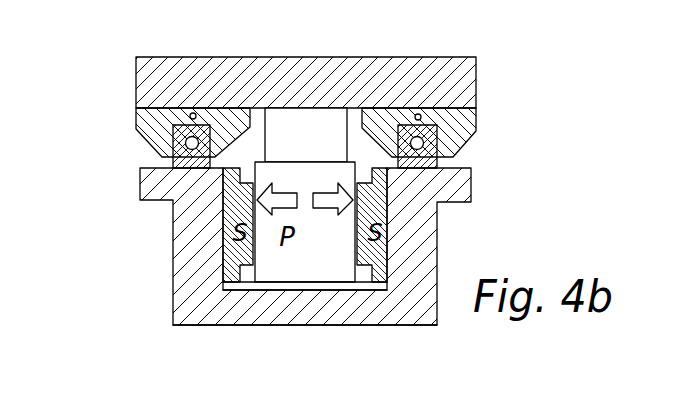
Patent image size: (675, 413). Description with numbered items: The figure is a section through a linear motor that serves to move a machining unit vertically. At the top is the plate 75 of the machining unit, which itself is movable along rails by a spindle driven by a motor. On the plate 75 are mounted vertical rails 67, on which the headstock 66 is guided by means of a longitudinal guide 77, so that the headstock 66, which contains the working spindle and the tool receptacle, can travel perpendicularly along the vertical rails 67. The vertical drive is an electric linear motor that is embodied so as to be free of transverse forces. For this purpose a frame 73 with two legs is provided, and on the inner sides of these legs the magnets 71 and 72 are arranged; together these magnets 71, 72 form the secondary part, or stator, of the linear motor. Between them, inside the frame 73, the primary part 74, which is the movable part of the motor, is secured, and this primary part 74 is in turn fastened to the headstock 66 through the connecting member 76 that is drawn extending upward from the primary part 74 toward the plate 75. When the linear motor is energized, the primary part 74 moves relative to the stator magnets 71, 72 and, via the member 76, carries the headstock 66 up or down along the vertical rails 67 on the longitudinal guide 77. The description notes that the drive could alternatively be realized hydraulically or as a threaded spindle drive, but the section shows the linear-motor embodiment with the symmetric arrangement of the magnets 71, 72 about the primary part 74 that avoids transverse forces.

The headstock 66 is at (140, 290).
The vertical rail 67 is at (222, 123).
The magnet 71 is at (377, 247).
The magnet 72 is at (240, 203).
The frame 73 is at (255, 310).
The primary part 74 is at (323, 265).
The plate 75 is at (453, 78).
The piston rod 76 is at (304, 123).
The longitudinal guide 77 is at (424, 143).